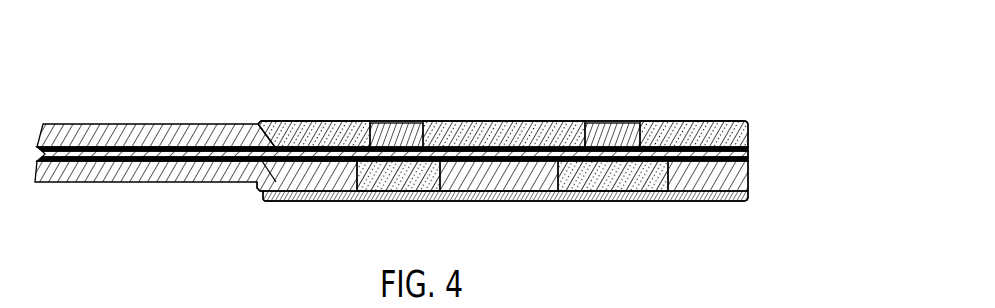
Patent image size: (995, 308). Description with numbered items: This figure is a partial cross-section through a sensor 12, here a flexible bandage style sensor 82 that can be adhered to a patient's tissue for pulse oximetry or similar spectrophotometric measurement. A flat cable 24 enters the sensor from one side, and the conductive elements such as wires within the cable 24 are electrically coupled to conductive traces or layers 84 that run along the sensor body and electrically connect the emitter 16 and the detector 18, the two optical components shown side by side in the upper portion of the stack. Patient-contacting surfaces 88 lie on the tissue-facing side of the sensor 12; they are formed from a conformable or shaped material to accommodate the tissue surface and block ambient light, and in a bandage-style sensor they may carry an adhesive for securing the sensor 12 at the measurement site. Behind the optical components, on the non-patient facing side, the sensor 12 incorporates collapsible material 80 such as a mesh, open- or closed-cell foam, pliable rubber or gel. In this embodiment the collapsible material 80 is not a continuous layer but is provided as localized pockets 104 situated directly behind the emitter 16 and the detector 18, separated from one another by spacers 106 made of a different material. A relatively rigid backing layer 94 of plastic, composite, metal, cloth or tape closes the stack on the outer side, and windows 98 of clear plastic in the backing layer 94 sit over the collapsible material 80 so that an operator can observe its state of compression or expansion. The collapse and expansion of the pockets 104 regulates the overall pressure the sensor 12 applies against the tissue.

The sensor 12 is at (692, 38).
The emitter 16 is at (388, 122).
The detector 18 is at (617, 122).
The cable 24 is at (232, 124).
The collapsible material 80 is at (442, 173).
The bandage style sensor 82 is at (748, 121).
The conductive traces or layers 84 is at (492, 121).
The patient-contacting surfaces 88 is at (316, 121).
The backing layer 94 is at (727, 201).
The windows 98 is at (397, 201).
The pockets 104 is at (423, 201).
The spacers 106 is at (502, 201).